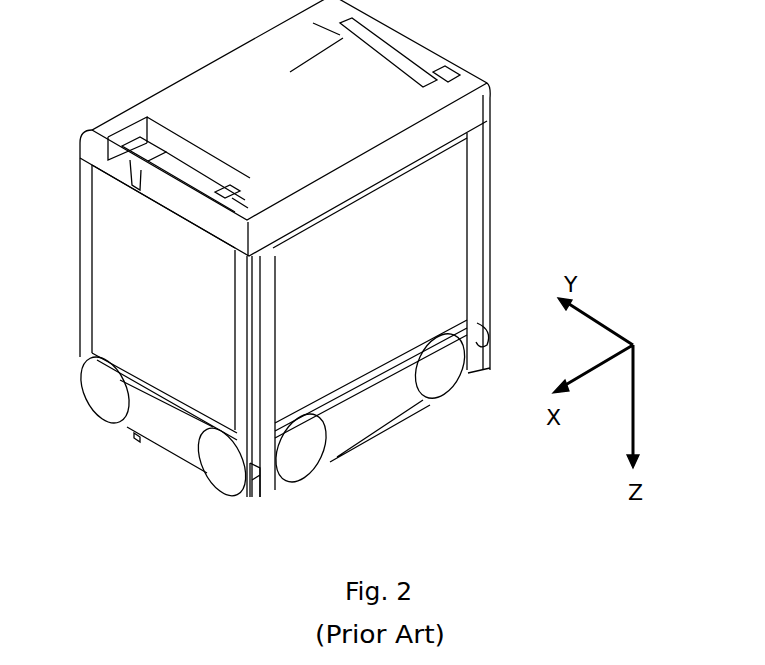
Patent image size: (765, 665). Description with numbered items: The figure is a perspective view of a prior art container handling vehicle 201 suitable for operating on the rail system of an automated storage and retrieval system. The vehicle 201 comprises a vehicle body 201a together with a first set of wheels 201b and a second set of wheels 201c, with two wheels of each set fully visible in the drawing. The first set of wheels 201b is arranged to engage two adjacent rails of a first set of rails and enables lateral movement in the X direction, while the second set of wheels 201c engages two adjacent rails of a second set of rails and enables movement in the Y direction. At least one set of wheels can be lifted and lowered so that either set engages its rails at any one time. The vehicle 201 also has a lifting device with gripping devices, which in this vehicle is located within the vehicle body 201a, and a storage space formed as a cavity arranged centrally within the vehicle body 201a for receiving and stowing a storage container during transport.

The container handling vehicle 201 is at (285, 248).
The vehicle body 201a is at (181, 103).
The first set of wheels 201b is at (422, 435).
The second set of wheels 201c is at (127, 455).